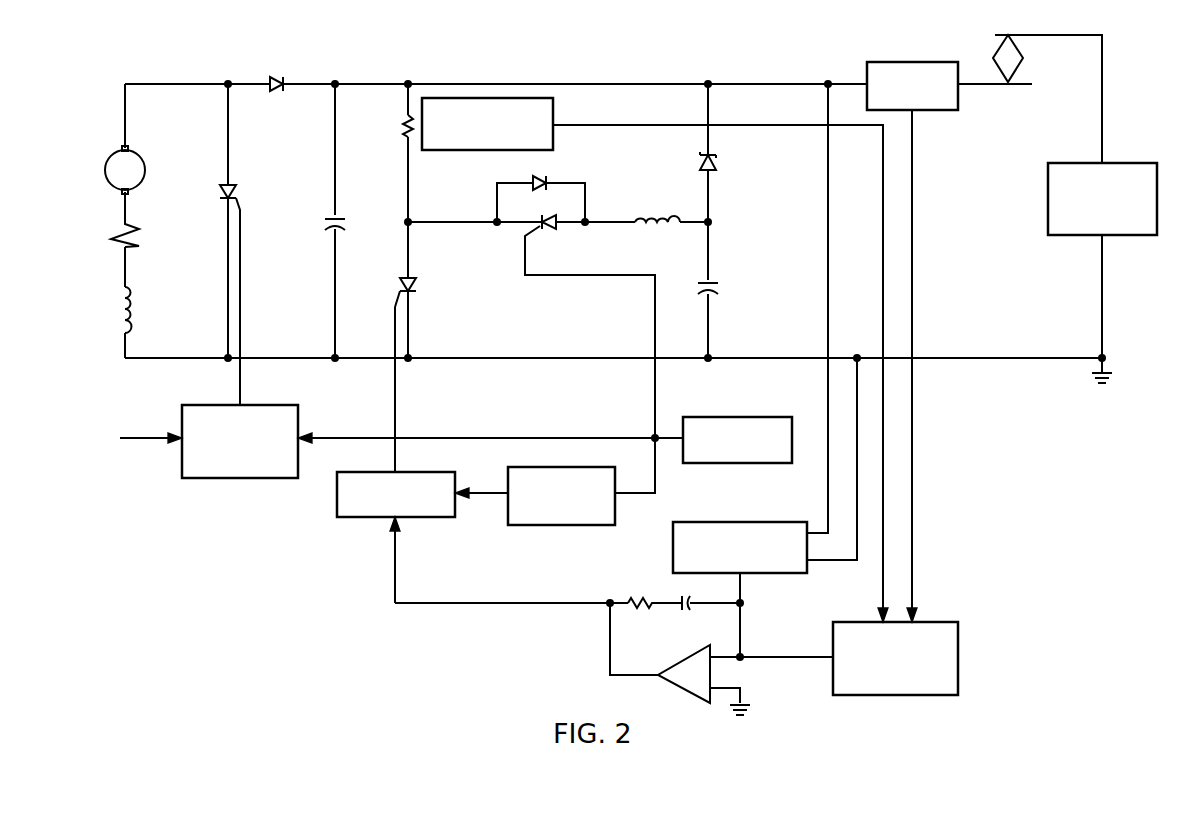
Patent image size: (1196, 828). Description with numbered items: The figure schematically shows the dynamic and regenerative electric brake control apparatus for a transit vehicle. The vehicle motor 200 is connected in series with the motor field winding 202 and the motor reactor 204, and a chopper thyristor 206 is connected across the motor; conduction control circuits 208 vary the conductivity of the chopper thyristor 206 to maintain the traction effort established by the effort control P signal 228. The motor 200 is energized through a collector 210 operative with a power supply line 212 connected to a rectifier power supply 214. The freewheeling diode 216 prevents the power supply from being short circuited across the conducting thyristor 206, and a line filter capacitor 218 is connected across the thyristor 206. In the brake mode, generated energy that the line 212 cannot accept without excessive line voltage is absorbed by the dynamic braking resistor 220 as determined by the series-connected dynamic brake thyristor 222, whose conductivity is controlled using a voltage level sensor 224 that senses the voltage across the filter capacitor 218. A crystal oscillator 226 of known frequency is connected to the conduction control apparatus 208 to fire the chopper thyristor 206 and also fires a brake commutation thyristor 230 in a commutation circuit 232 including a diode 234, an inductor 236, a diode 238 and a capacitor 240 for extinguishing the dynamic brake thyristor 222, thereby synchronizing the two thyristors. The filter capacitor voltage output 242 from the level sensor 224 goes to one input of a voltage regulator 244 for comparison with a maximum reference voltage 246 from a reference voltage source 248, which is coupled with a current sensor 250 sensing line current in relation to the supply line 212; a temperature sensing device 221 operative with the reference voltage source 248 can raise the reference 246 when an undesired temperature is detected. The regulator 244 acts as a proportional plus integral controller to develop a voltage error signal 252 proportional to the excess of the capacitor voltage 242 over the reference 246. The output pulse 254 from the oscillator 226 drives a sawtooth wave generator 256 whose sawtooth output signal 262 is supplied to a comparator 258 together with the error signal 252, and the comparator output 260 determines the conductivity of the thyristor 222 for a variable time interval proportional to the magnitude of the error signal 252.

The vehicle motor 200 is at (141, 158).
The motor field winding 202 is at (112, 228).
The motor reactor 204 is at (125, 302).
The chopper thyristor 206 is at (220, 191).
The conduction control apparatus 208 is at (286, 405).
The collector 210 is at (1022, 65).
The power supply line 212 is at (1055, 35).
The rectifier power supply 214 is at (1132, 163).
The freewheeling diode 216 is at (276, 78).
The line filter capacitor 218 is at (325, 226).
The dynamic braking resistor 220 is at (403, 122).
The temperature sensing device 221 is at (553, 103).
The dynamic brake thyristor 222 is at (403, 283).
The voltage level sensor 224 is at (746, 522).
The crystal oscillator 226 is at (760, 418).
The effort control P signal 228 is at (128, 438).
The brake commutation thyristor 230 is at (548, 230).
The commutation circuit 232 is at (628, 197).
The diode 234 is at (540, 193).
The inductor 236 is at (648, 228).
The diode 238 is at (716, 163).
The capacitor 240 is at (722, 290).
The filter capacitor voltage output 242 is at (745, 580).
The voltage regulator 244 is at (662, 637).
The maximum reference voltage 246 is at (757, 657).
The reference voltage source 248 is at (878, 615).
The current sensor 250 is at (910, 60).
The voltage error signal 252 is at (571, 603).
The output pulse 254 is at (662, 436).
The sawtooth wave generator 256 is at (574, 467).
The comparator 258 is at (378, 472).
The comparator output 260 is at (398, 435).
The sawtooth output signal 262 is at (490, 490).